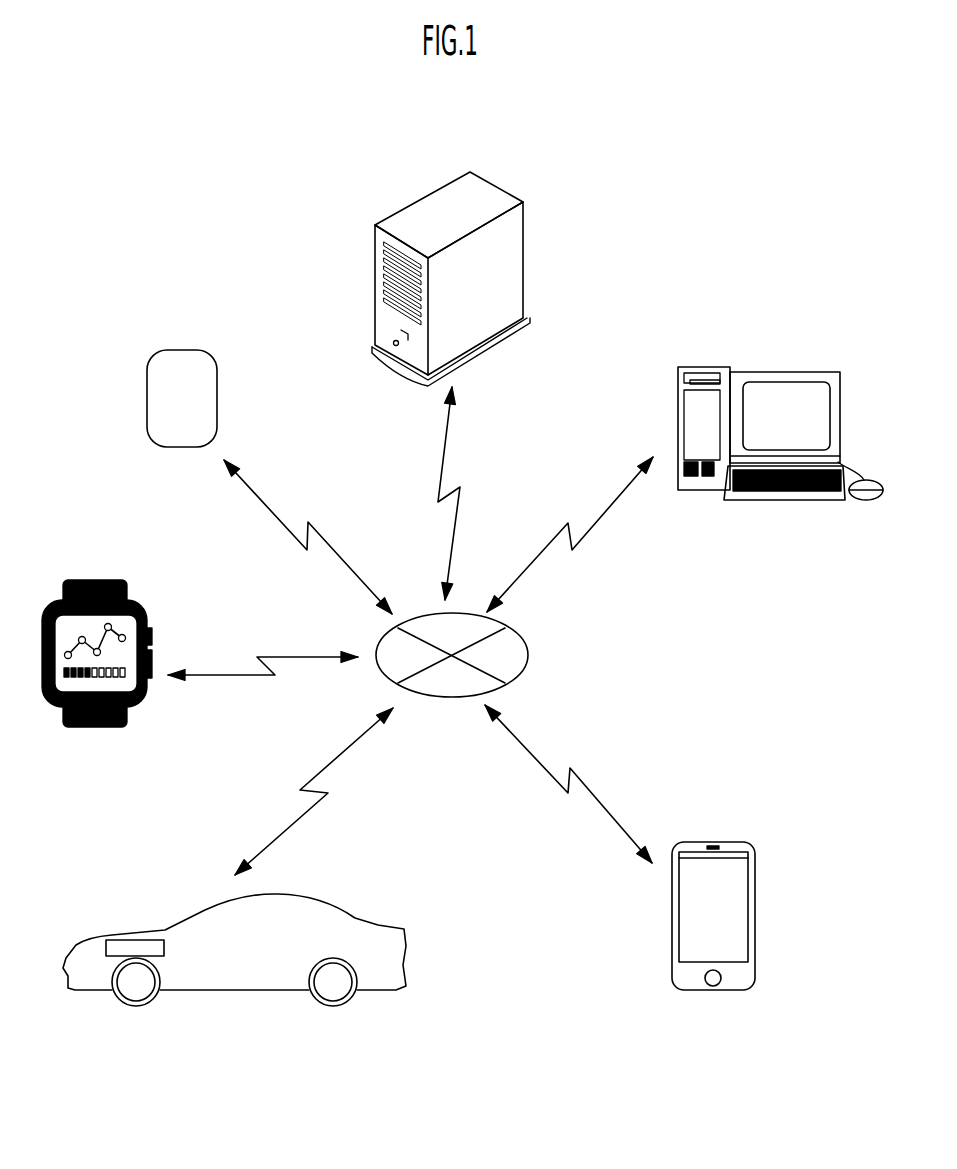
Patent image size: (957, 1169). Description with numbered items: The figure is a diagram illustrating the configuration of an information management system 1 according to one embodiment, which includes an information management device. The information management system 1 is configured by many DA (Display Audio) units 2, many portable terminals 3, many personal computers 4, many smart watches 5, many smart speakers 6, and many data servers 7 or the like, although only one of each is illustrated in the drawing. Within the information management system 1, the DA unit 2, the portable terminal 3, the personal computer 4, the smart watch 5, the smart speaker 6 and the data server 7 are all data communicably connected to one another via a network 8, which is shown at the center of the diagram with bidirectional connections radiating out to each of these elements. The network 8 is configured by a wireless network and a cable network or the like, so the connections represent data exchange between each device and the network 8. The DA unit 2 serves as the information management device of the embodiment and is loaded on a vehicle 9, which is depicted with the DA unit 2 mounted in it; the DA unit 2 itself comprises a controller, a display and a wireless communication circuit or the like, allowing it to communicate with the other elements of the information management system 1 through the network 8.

The information management system 1 is at (663, 183).
The DA (Display Audio) unit 2 is at (134, 940).
The portable terminal 3 is at (733, 842).
The personal computer 4 is at (815, 372).
The smart watch 5 is at (109, 580).
The smart speaker 6 is at (188, 350).
The data server 7 is at (485, 172).
The network 8 is at (520, 636).
The vehicle 9 is at (333, 904).